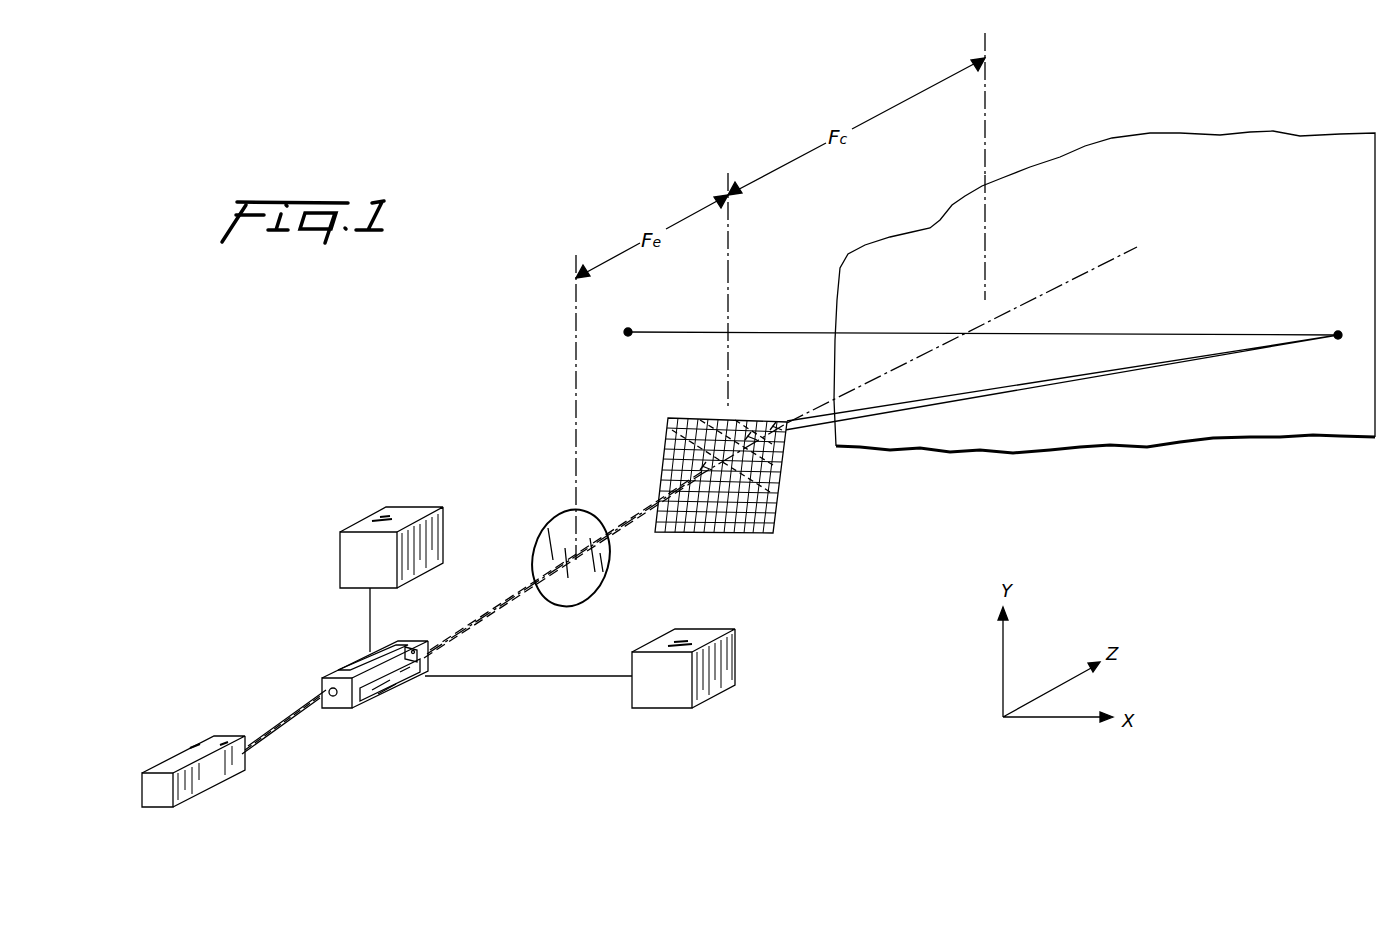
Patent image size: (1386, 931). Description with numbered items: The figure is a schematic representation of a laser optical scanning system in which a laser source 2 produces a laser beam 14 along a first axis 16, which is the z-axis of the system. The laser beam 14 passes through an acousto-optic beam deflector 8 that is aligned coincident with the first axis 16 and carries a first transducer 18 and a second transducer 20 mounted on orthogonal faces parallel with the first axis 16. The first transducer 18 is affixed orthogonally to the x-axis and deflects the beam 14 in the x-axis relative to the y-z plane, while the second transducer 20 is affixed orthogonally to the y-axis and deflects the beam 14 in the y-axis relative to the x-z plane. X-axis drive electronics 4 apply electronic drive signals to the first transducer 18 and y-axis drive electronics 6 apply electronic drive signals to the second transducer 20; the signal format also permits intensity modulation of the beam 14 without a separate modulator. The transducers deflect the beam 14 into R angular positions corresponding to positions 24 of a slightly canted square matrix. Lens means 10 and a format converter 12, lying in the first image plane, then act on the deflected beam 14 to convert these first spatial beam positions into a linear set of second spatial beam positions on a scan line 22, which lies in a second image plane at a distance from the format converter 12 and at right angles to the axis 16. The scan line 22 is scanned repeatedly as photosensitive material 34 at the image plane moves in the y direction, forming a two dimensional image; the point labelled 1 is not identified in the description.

The point on object surface 1 is at (1344, 326).
The laser source 2 is at (213, 775).
The x-axis drive electronics 4 is at (734, 663).
The y-axis drive electronics 6 is at (340, 548).
The acousto-optic beam deflector 8 is at (375, 692).
The lens means 10 is at (603, 577).
The format converter 12 is at (780, 485).
The laser beam 14 is at (277, 722).
The first axis 16 is at (1050, 275).
The first transducer 18 is at (383, 680).
The second transducer 20 is at (347, 667).
The scan line 22 is at (767, 332).
The positions of a square matrix 24 is at (708, 473).
The photosensitive material 34 is at (1265, 428).